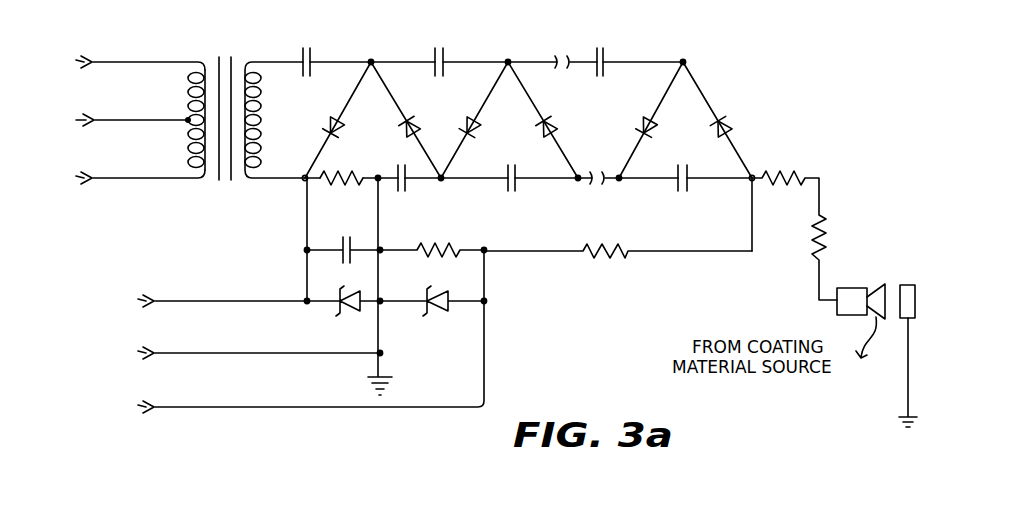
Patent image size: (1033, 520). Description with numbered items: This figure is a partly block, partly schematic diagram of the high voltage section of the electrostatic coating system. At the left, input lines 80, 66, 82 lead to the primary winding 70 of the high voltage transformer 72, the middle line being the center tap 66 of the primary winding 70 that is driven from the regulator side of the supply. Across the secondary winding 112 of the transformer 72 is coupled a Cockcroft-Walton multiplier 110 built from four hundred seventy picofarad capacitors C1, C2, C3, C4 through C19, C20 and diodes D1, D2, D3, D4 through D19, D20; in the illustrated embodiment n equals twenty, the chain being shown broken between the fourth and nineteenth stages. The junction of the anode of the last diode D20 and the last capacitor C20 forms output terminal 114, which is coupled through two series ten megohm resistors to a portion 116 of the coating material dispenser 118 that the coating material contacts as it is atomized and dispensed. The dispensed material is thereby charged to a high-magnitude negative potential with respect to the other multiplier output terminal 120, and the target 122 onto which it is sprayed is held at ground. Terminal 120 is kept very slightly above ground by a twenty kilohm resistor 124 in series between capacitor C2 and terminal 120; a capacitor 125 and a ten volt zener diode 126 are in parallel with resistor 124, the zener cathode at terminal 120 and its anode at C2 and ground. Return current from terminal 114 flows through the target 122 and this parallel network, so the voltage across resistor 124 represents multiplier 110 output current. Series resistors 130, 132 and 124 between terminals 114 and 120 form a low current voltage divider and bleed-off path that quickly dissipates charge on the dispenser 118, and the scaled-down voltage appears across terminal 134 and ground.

The input line 80 is at (127, 59).
The center tap 66 is at (120, 119).
The input line 82 is at (127, 176).
The primary winding 70 is at (186, 45).
The high voltage transformer 72 is at (232, 45).
The secondary winding 112 is at (253, 191).
The Cockcroft-Walton multiplier 110 is at (518, 36).
The capacitor C1 is at (311, 57).
The capacitor C2 is at (407, 188).
The capacitor C3 is at (445, 58).
The capacitor C4 is at (516, 190).
The capacitor C19 is at (606, 60).
The capacitor C20 is at (688, 190).
The diode D1 is at (348, 132).
The diode D2 is at (408, 126).
The diode D3 is at (486, 125).
The diode D4 is at (553, 125).
The diode D19 is at (657, 125).
The diode D20 is at (733, 125).
The output terminal 120 is at (304, 181).
The resistor 124 is at (339, 187).
The capacitor 125 is at (353, 238).
The zener diode 126 is at (346, 313).
The resistor 132 is at (437, 249).
The terminal 134 is at (488, 254).
The resistor 130 is at (610, 260).
The output terminal 114 is at (754, 181).
The portion of coating material dispenser 116 is at (835, 304).
The coating material dispenser 118 is at (880, 289).
The target 122 is at (908, 276).